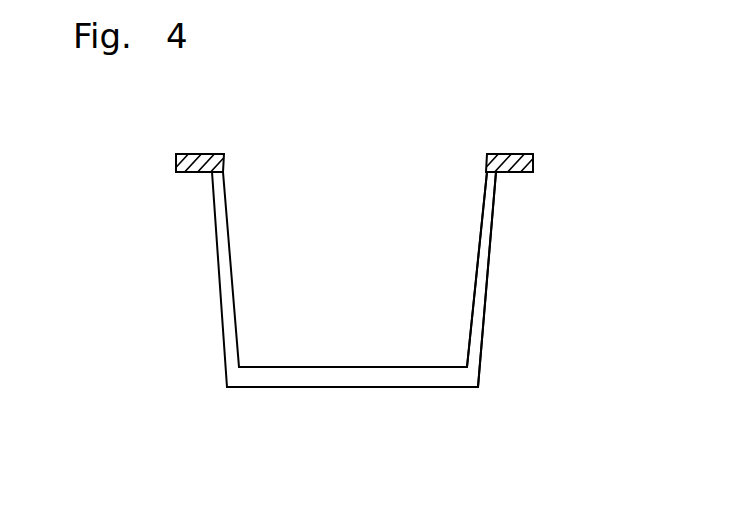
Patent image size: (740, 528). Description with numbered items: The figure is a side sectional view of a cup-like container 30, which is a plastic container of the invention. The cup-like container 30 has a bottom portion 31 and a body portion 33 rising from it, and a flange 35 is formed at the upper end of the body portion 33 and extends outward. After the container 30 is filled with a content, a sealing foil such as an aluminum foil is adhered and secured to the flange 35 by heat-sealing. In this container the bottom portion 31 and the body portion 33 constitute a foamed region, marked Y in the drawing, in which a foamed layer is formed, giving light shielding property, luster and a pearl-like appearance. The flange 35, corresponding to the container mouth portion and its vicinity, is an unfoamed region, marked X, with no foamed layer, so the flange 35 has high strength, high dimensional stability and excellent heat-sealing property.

The cup-like container 30 is at (532, 269).
The bottom portion 31 is at (307, 374).
The body portion 33 is at (478, 322).
The flange 35 is at (197, 153).